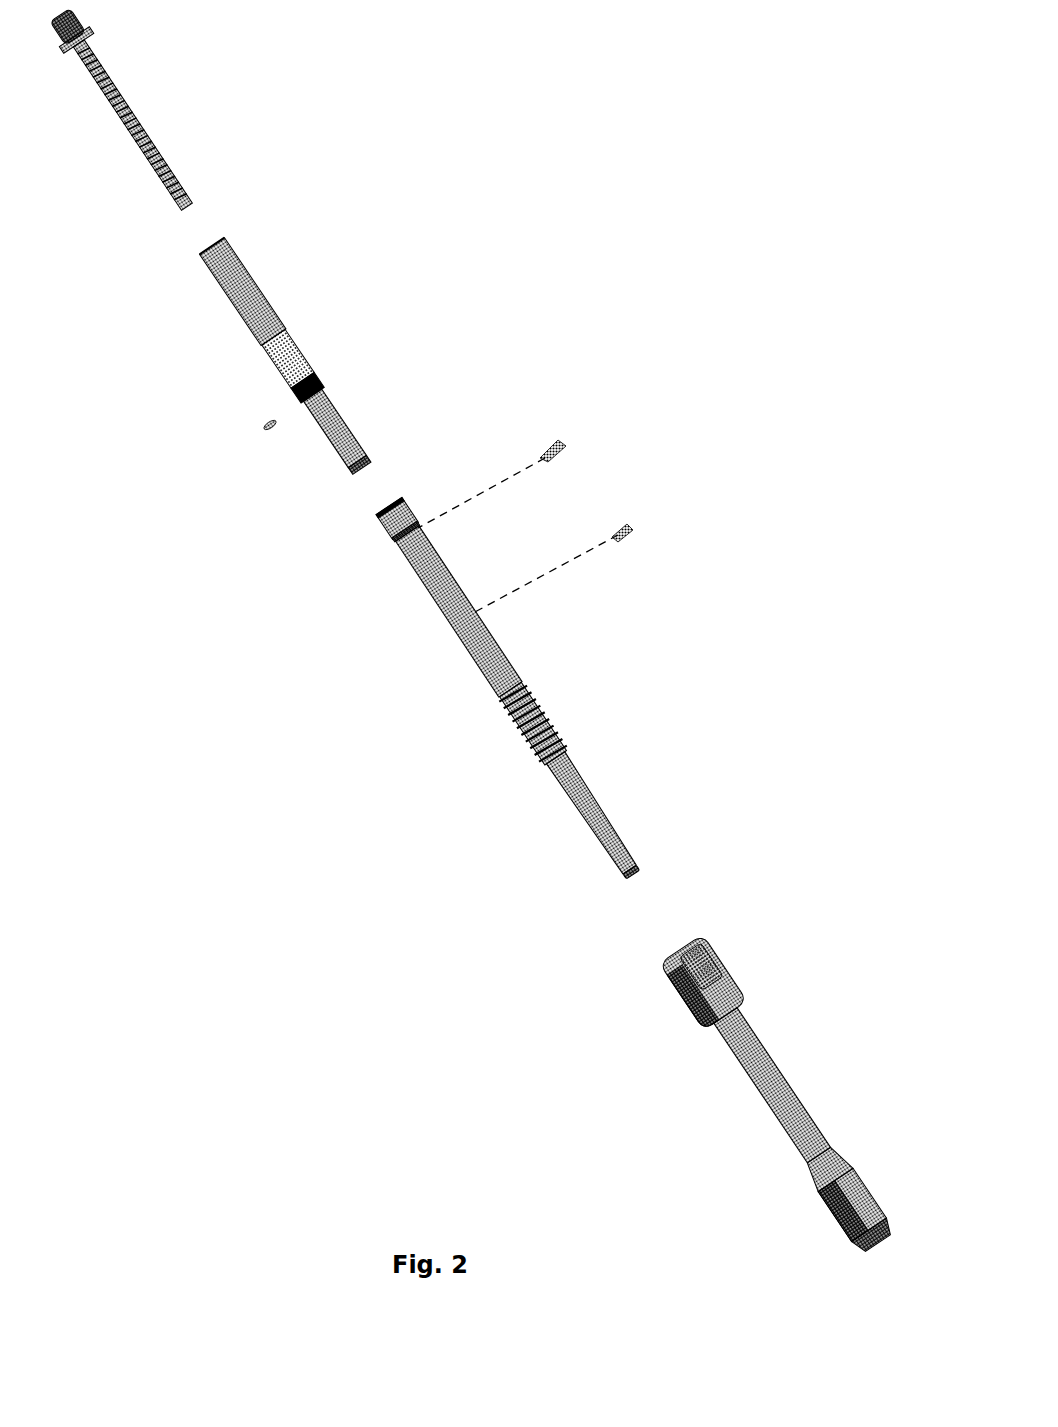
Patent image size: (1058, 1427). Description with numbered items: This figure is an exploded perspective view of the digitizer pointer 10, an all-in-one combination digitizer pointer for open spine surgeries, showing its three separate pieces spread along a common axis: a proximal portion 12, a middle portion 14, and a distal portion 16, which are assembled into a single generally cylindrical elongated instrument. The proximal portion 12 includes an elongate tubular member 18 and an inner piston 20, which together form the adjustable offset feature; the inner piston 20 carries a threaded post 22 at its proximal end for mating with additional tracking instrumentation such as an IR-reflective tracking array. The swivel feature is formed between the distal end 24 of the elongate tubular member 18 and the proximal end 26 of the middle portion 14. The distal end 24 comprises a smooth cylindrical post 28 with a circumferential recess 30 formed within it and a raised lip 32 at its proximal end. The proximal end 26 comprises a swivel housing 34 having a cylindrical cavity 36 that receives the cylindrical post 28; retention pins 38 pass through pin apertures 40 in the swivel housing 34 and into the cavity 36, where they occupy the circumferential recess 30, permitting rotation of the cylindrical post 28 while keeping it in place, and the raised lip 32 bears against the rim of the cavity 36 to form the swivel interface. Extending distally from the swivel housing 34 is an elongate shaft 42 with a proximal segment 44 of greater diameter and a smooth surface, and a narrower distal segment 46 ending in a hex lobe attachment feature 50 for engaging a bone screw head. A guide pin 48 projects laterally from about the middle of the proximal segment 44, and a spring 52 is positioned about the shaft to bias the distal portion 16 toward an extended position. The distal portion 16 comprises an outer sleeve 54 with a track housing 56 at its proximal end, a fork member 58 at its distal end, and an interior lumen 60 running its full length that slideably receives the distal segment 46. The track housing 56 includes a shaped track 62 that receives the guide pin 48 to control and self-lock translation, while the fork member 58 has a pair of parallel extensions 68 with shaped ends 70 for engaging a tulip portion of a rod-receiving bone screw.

The digitizer pointer 10 is at (618, 218).
The proximal portion 12 is at (150, 355).
The middle portion 14 is at (350, 678).
The distal portion 16 is at (678, 1137).
The elongate tubular member 18 is at (252, 280).
The inner piston 20 is at (98, 68).
The threaded post 22 is at (75, 25).
The distal end 24 is at (310, 475).
The proximal end 26 is at (365, 560).
The cylindrical post 28 is at (328, 440).
The circumferential recess 30 is at (345, 458).
The raised lip 32 is at (337, 412).
The swivel housing 34 is at (382, 525).
The cylindrical cavity 36 is at (388, 496).
The retention pins 38 is at (562, 443).
The pin apertures 40 is at (413, 533).
The elongate shaft 42 is at (542, 660).
The proximal segment 44 is at (475, 662).
The distal segment 46 is at (563, 792).
The guide pin 48 is at (627, 527).
The hex lobe attachment feature 50 is at (640, 866).
The spring 52 is at (537, 708).
The outer sleeve 54 is at (778, 1057).
The track housing 56 is at (677, 995).
The fork member 58 is at (857, 1162).
The interior lumen 60 is at (665, 946).
The shaped track 62 is at (730, 962).
The parallel extensions 68 is at (875, 1192).
The shaped ends 70 is at (888, 1232).